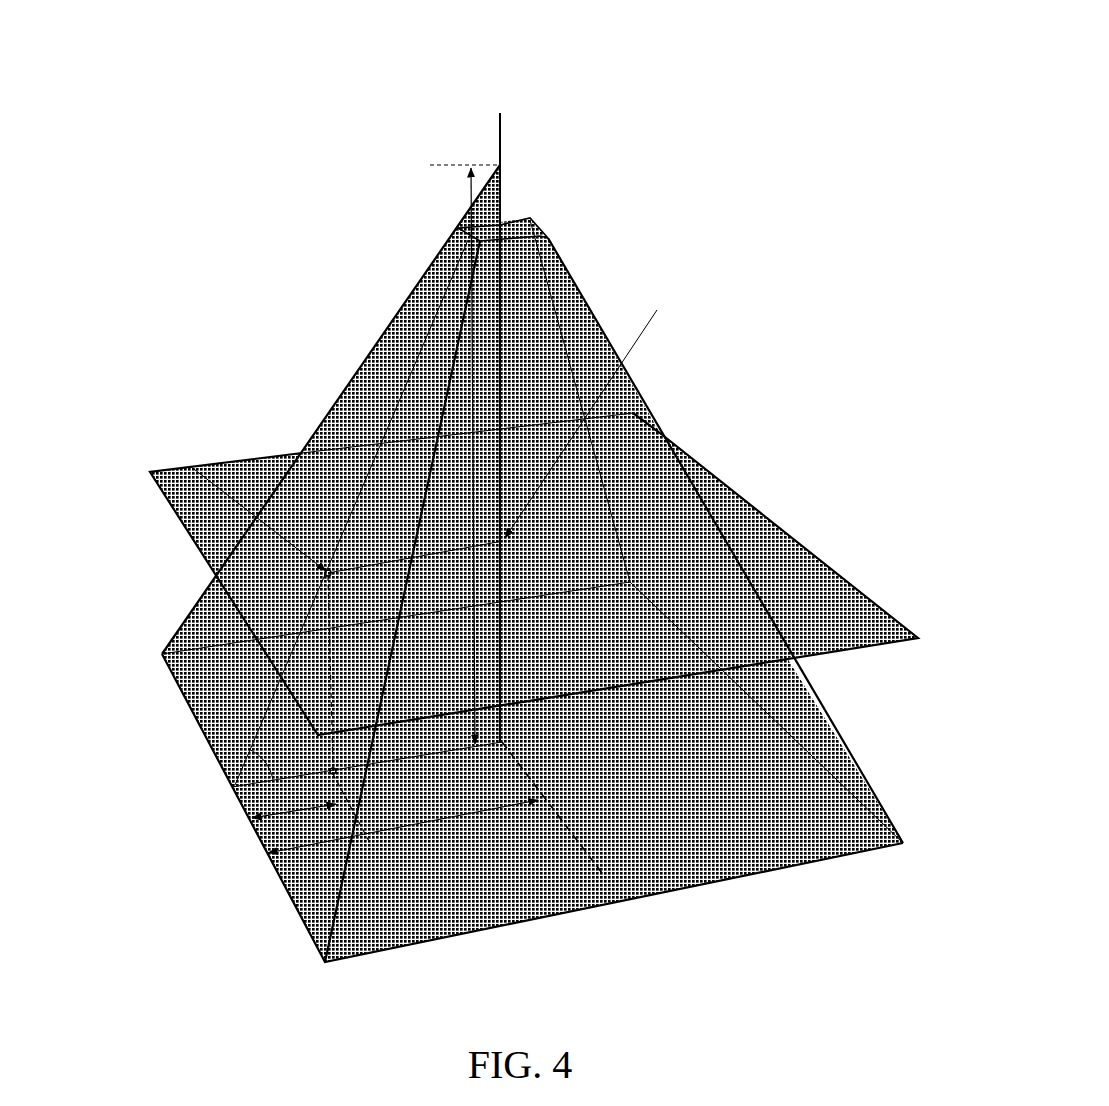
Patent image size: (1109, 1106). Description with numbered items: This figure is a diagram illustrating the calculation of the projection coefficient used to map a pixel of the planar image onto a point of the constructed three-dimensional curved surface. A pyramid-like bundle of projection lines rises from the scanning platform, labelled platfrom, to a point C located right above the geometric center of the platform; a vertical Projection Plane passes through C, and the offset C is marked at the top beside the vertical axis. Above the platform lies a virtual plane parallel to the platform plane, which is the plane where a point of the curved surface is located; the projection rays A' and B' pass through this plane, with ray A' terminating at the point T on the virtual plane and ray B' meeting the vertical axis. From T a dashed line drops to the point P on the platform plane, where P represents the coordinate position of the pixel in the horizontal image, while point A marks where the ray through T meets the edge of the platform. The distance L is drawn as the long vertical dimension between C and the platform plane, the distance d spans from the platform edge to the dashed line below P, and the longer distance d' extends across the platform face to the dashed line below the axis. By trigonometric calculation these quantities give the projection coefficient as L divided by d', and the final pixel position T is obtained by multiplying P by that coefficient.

The point A on platform edge A is at (347, 790).
The projection ray A' is at (200, 499).
The projection ray B' is at (522, 440).
The point C is at (503, 164).
The final pixel position T is at (311, 667).
The coordinate position of the 3D pixel P is at (344, 796).
The distance L is at (462, 456).
The distance d is at (294, 822).
The distance d' is at (403, 833).
The projection plane Projection Plane is at (507, 220).
The scanning platform platfrom is at (724, 656).